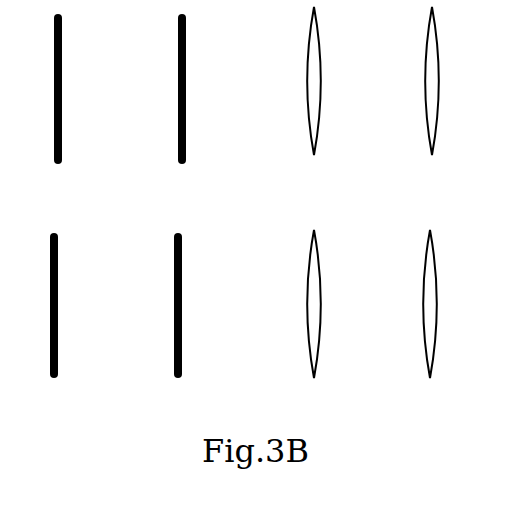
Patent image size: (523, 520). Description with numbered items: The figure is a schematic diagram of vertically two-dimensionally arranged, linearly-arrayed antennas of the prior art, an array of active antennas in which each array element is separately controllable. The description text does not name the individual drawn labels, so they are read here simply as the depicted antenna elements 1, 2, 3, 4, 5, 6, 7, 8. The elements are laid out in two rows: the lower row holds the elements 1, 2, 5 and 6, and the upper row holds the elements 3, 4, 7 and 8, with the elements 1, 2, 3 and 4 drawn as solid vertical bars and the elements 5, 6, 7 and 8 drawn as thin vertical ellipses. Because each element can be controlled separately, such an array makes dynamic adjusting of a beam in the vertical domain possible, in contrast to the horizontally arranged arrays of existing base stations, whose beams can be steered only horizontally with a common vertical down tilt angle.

The first stripe pattern 1 is at (53, 325).
The second stripe pattern 2 is at (177, 325).
The third stripe pattern 3 is at (57, 107).
The fourth stripe pattern 4 is at (181, 107).
The first elliptical pattern 5 is at (313, 322).
The second elliptical pattern 6 is at (429, 322).
The third elliptical pattern 7 is at (313, 101).
The fourth elliptical pattern 8 is at (431, 101).